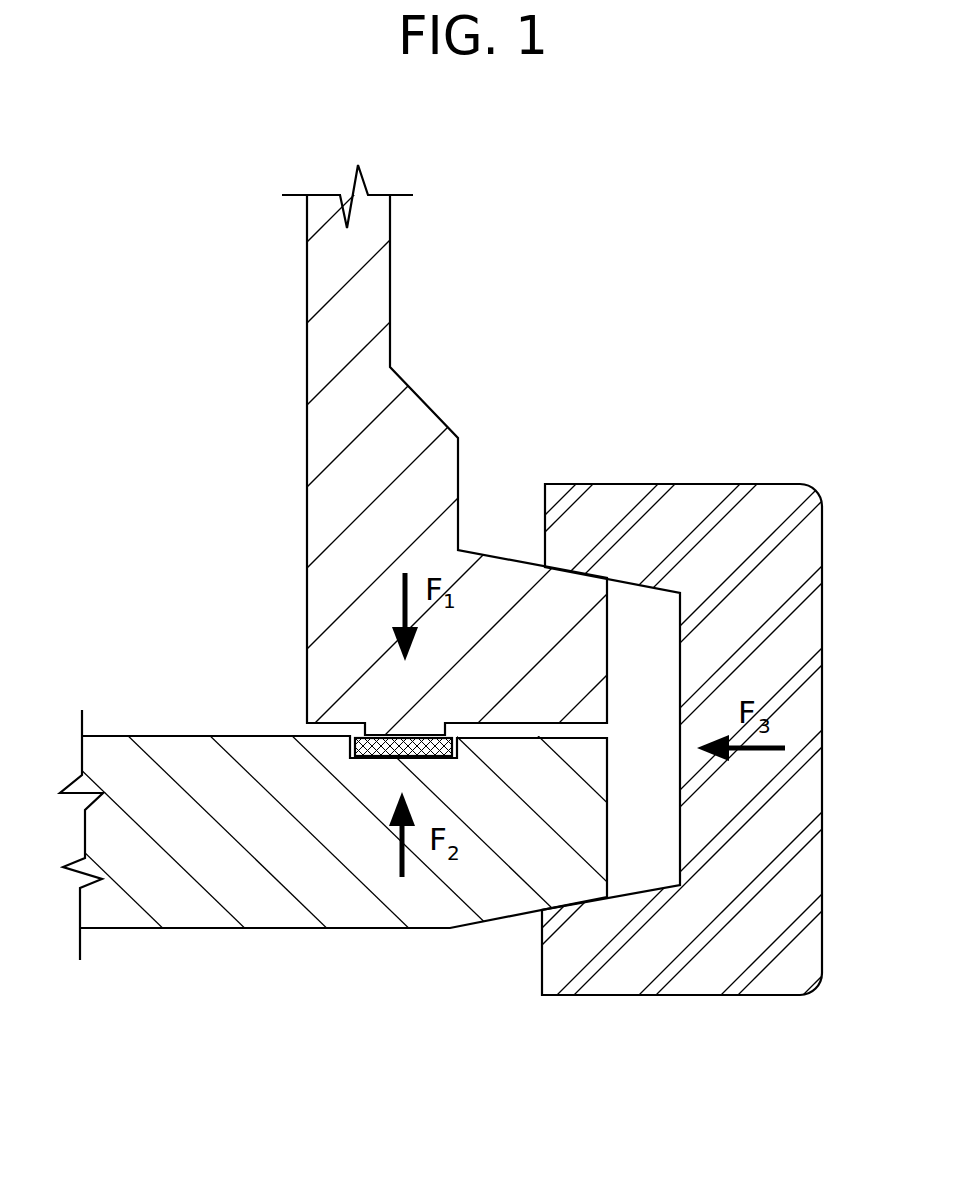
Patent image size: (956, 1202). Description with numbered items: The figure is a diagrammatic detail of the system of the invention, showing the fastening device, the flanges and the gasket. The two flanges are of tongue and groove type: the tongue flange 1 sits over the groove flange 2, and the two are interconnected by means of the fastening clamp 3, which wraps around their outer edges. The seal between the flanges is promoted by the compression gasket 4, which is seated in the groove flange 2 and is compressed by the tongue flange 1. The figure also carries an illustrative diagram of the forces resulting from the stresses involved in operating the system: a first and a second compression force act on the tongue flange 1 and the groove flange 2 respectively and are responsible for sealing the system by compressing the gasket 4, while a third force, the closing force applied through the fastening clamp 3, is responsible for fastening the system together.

The tongue flange 1 is at (438, 408).
The groove flange 2 is at (337, 928).
The fastening clamp 3 is at (730, 484).
The compression gasket 4 is at (350, 738).